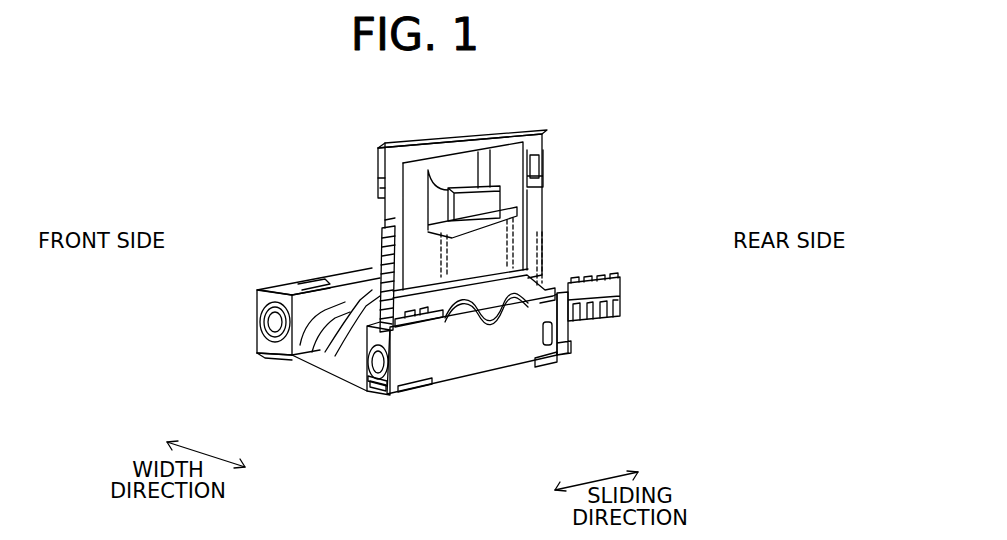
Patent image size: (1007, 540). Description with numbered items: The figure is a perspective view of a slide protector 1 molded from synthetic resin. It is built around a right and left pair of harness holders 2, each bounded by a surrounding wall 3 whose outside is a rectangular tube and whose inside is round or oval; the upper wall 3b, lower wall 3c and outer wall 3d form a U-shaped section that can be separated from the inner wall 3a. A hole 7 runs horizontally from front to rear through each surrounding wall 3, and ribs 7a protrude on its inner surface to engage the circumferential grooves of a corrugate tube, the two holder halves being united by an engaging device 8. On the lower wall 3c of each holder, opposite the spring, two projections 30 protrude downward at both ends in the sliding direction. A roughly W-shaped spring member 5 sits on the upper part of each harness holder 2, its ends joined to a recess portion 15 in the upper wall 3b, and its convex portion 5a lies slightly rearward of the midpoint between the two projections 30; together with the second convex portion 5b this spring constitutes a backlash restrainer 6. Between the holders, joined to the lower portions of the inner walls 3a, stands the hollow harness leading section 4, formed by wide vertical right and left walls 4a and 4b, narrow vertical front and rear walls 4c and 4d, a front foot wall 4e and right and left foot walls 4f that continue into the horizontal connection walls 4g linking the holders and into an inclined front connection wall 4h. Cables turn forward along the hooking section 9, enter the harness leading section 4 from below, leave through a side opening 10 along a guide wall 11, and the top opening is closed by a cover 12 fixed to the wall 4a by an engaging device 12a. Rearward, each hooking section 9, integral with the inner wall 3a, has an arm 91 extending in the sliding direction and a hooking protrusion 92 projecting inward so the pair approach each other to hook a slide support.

The slide protector 1 is at (708, 185).
The harness holder 2 is at (313, 272).
The surrounding wall 3 is at (436, 390).
The inner wall 3a is at (322, 365).
The upper wall 3b is at (275, 290).
The lower wall 3c is at (273, 363).
The outer wall 3d is at (252, 323).
The harness leading section 4 is at (540, 202).
The right wall 4a is at (513, 236).
The left wall 4b is at (383, 222).
The front wall 4c is at (375, 230).
The rear wall 4d is at (540, 221).
The front foot wall 4e is at (320, 278).
The foot wall 4f is at (273, 290).
The connection wall 4g is at (262, 312).
The connection wall 4h is at (296, 365).
The spring member 5 is at (345, 293).
The convex portion 5a is at (515, 322).
The spring arm 5b is at (492, 335).
The backlash restrainer 6 is at (574, 353).
The hole 7 is at (390, 392).
The rib 7a is at (372, 368).
The engaging device 8 is at (425, 380).
The hooking section 9 is at (617, 320).
The arm 91 is at (588, 318).
The hooking protrusion 92 is at (590, 277).
The side opening 10 is at (500, 189).
The guide wall 11 is at (540, 172).
The cover 12 is at (468, 129).
The engaging device 12a is at (542, 152).
The recess portion 15 is at (506, 352).
The projection 30 is at (265, 358).